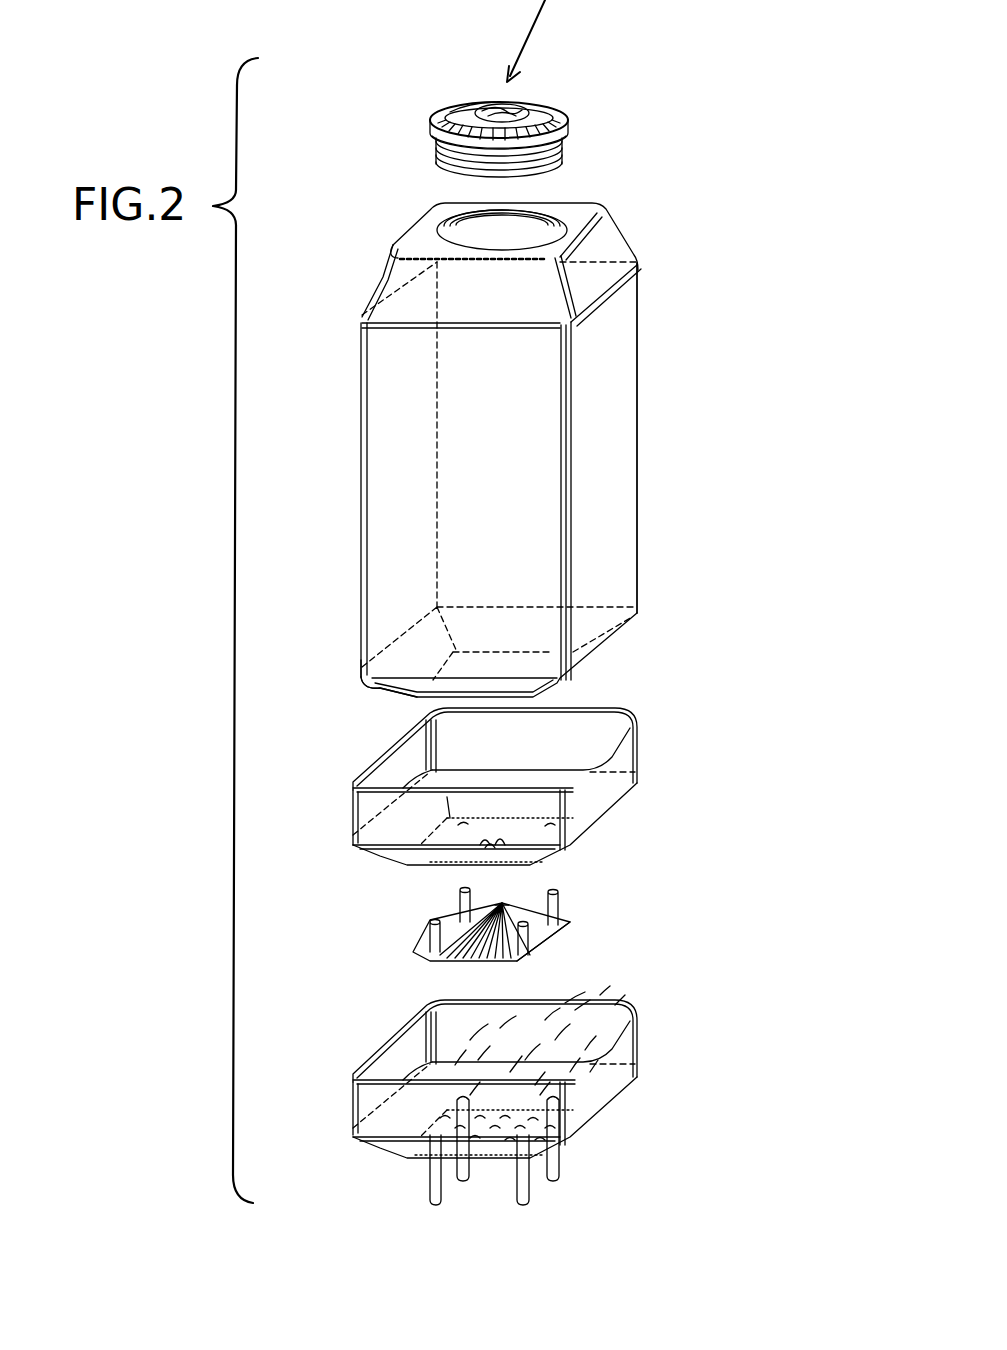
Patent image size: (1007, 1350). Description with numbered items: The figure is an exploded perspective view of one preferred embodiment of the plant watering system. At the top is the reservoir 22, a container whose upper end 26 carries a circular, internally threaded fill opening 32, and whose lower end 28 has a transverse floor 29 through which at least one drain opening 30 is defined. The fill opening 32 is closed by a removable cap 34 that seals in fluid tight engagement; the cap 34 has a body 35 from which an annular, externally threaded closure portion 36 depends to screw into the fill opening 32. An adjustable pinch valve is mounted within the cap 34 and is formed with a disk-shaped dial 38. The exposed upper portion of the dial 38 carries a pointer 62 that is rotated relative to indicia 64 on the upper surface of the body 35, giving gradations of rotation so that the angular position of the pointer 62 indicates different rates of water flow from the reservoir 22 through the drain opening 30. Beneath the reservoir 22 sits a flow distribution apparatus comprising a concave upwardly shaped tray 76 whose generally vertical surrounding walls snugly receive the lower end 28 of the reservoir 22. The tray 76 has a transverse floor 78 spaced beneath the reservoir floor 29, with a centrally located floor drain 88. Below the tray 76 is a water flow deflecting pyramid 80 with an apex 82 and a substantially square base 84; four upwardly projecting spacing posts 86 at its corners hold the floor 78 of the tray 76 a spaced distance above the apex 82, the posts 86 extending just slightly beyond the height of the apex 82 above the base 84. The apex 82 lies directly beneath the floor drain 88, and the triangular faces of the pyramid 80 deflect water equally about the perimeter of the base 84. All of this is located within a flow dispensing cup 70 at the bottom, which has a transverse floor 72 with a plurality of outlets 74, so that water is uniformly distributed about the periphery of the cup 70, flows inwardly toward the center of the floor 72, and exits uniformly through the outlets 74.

The reservoir 22 is at (683, 398).
The upper end 26 is at (610, 240).
The lower end 28 is at (600, 620).
The transverse floor 29 is at (578, 557).
The drain opening 30 is at (356, 680).
The fill opening 32 is at (477, 247).
The cap 34 is at (588, 118).
The body 35 is at (440, 145).
The closure portion 36 is at (567, 155).
The dial 38 is at (507, 100).
The pointer 62 is at (487, 100).
The indicia 64 is at (560, 107).
The flow dispensing cup 70 is at (660, 1049).
The transverse floor 72 is at (490, 1158).
The outlets 74 is at (547, 992).
The tray 76 is at (637, 765).
The transverse floor 78 is at (603, 712).
The flow deflecting pyramid 80 is at (514, 887).
The apex 82 is at (495, 905).
The base 84 is at (557, 942).
The spacing posts 86 is at (423, 936).
The floor drain 88 is at (425, 807).